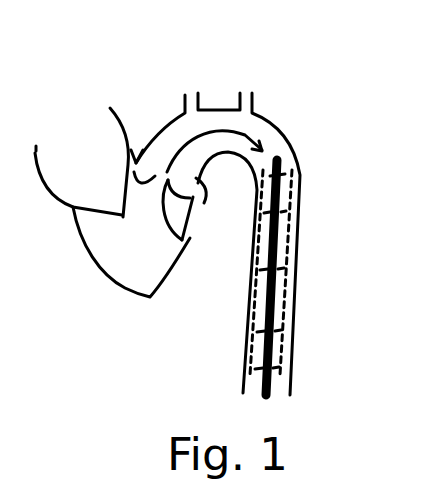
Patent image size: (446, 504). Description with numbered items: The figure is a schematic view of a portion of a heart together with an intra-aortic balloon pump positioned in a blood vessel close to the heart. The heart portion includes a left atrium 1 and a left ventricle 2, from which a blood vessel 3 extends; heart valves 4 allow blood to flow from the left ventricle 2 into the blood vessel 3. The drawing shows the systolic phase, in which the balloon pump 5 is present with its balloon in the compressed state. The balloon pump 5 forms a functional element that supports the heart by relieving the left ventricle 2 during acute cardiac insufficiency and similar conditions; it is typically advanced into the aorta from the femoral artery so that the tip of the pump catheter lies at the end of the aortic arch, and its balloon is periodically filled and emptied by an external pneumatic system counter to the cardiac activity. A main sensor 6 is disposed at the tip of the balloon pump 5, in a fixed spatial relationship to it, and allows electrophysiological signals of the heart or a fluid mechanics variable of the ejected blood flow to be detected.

The left atrium 1 is at (95, 137).
The left ventricle 2 is at (127, 268).
The blood vessel 3 is at (280, 124).
The heart valves 4 is at (178, 238).
The balloon pump 5 is at (297, 233).
The main sensor 6 is at (298, 163).